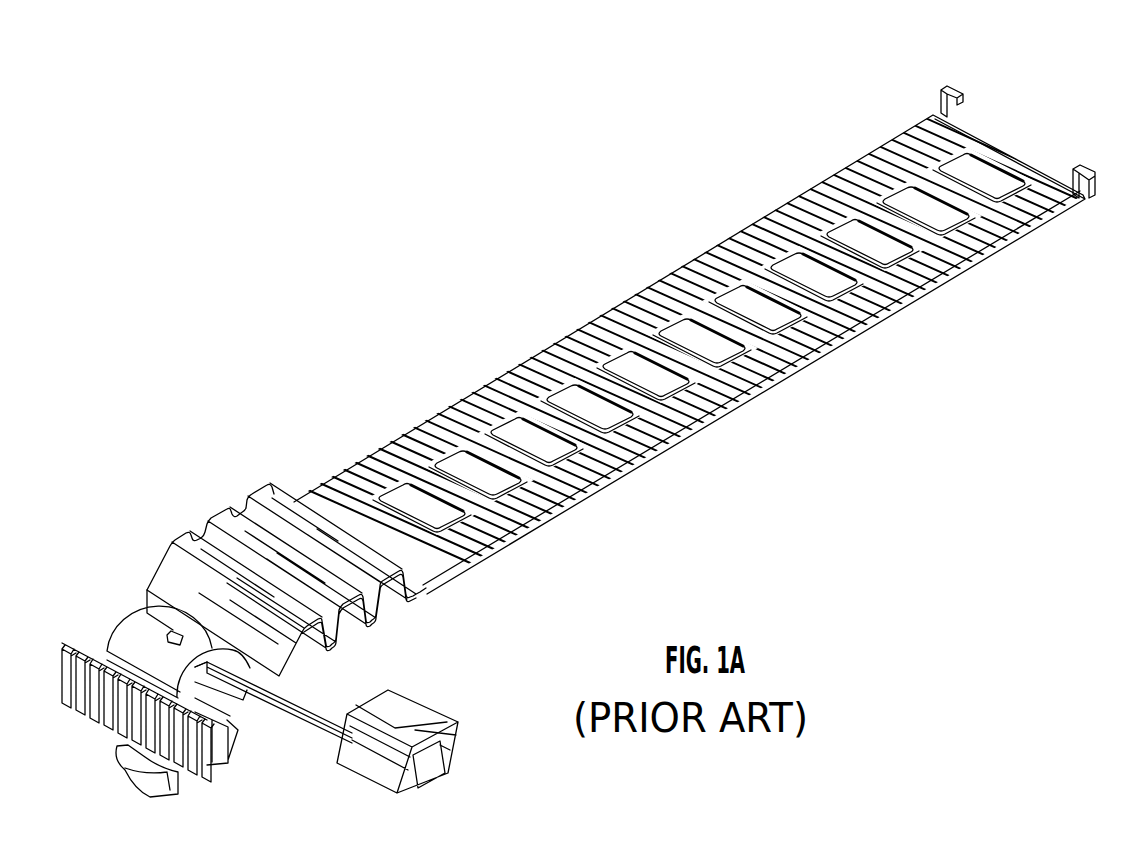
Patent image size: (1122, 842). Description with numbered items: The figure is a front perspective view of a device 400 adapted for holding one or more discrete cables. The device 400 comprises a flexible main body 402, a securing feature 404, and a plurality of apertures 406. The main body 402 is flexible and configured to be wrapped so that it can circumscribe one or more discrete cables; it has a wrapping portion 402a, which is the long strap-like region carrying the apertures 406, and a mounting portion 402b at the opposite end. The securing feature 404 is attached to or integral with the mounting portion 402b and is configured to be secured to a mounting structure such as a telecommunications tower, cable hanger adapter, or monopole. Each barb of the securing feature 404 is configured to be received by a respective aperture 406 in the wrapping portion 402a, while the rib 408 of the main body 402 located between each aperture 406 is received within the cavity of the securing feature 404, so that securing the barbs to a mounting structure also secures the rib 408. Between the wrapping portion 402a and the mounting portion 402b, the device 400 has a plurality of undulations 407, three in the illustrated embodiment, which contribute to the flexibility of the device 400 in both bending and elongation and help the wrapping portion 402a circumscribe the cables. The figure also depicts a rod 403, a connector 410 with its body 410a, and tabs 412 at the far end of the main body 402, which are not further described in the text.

The device 400 is at (579, 432).
The main body 402 is at (695, 312).
The wrapping portion 402a is at (716, 447).
The mounting portion 402b is at (117, 612).
The rod 403 is at (321, 718).
The securing feature 404 is at (212, 802).
The apertures 406 is at (614, 357).
The undulations 407 is at (234, 541).
The rib 408 is at (706, 310).
The connector 410 is at (433, 741).
The connector body 410a is at (414, 713).
The tabs 412 is at (1080, 166).